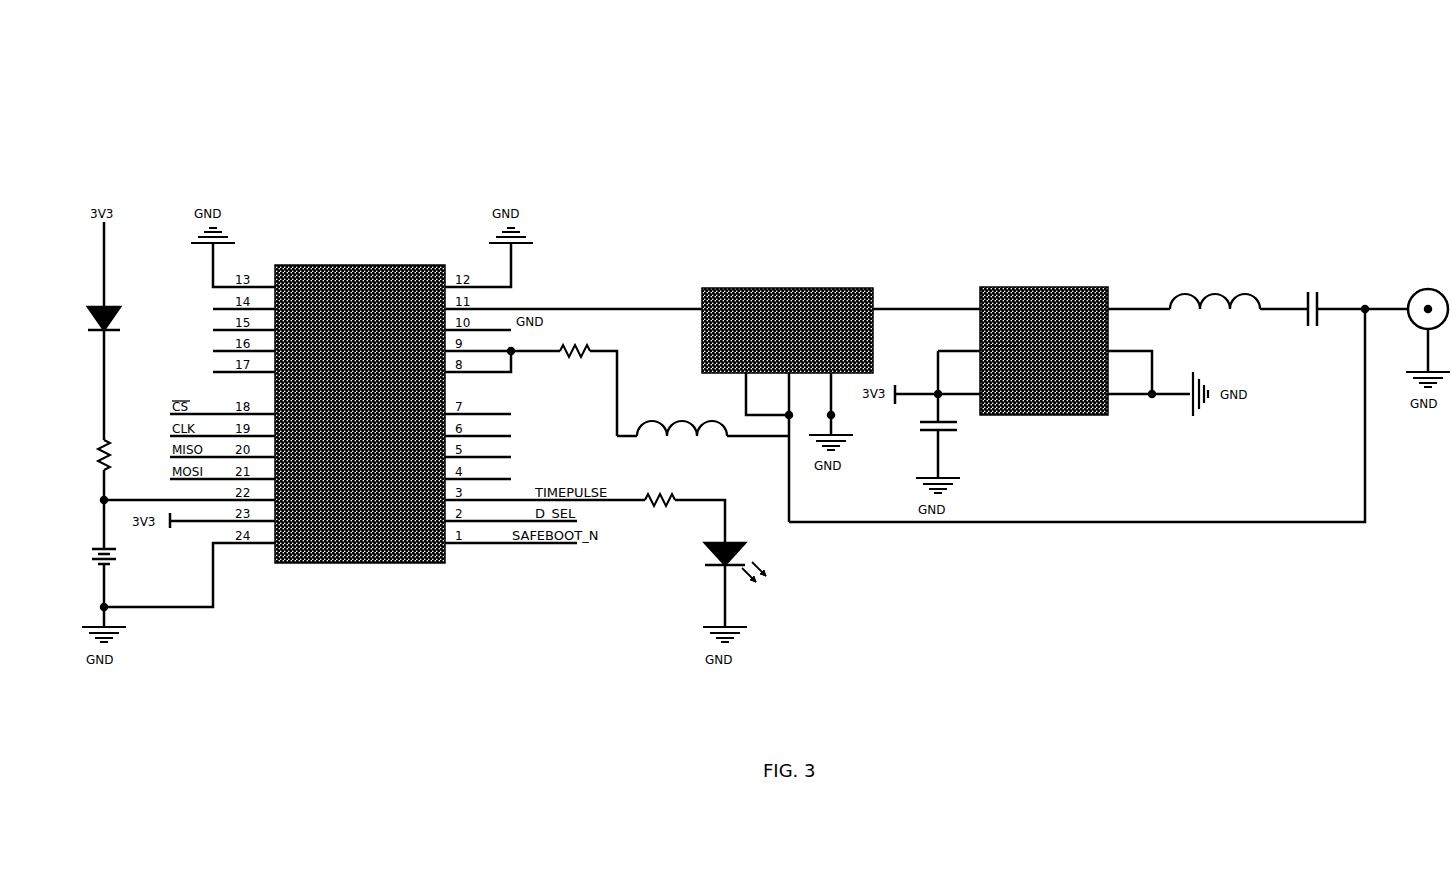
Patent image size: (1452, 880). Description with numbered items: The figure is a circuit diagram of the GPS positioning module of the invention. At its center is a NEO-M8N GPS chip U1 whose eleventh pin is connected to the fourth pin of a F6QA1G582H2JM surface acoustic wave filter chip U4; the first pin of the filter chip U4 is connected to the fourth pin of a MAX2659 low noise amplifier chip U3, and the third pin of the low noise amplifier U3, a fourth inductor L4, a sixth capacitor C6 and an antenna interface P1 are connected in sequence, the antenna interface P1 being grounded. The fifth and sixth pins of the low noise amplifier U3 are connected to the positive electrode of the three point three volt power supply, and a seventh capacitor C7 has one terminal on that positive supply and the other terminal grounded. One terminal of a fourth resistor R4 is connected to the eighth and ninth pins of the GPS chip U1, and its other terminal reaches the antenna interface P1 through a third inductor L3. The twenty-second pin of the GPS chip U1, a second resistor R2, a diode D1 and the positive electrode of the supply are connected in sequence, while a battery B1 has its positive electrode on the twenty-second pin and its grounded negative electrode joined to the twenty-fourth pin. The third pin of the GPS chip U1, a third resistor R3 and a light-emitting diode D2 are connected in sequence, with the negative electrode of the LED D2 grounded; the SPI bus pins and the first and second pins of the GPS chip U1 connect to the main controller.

The diode D1 is at (114, 331).
The second resistor R2 is at (112, 469).
The battery B1 is at (111, 578).
The NEO-M8N GPS chip U1 is at (360, 415).
The fourth resistor R4 is at (585, 384).
The third inductor L3 is at (703, 425).
The F6QA1G582H2JM surface acoustic wave filter chip U4 is at (788, 396).
The MAX2659 low noise amplifier chip U3 is at (1042, 342).
The seventh capacitor C7 is at (956, 436).
The fourth inductor L4 is at (1215, 297).
The sixth capacitor C6 is at (1308, 299).
The antenna interface P1 is at (1417, 320).
The third resistor R3 is at (681, 512).
The light-emitting diode D2 is at (746, 585).